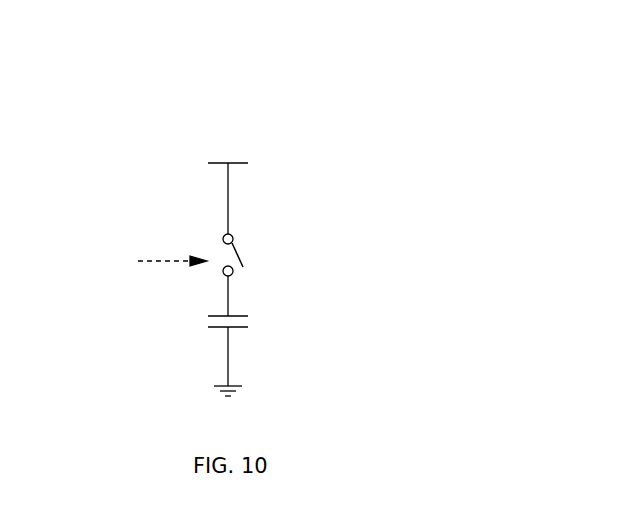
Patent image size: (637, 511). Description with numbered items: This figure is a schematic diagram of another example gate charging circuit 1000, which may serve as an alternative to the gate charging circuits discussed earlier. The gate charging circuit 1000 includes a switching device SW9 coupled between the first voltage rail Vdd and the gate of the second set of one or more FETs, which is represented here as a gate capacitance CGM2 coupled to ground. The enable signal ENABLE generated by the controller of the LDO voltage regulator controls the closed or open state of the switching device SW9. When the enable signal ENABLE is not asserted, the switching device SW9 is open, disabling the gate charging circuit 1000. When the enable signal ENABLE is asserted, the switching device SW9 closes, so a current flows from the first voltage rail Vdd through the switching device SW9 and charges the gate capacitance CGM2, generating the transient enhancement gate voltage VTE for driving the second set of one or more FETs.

The gate charging circuit 1000 is at (320, 95).
The first voltage rail Vdd is at (227, 184).
The switching device SW9 is at (265, 255).
The enable signal ENABLE is at (128, 260).
The transient enhancement gate voltage VTE is at (247, 296).
The gate capacitance CGM2 is at (198, 326).